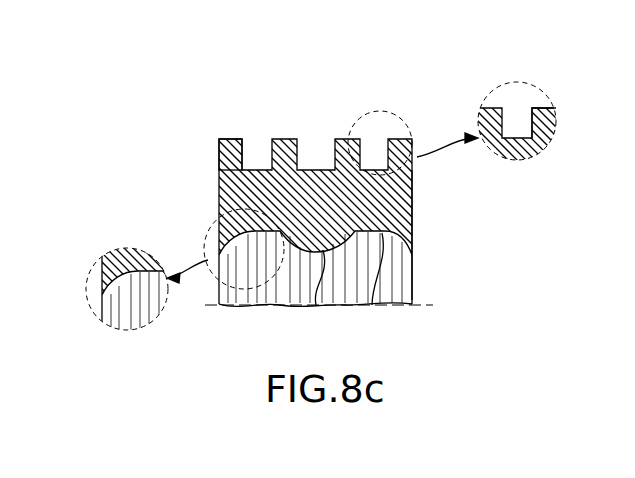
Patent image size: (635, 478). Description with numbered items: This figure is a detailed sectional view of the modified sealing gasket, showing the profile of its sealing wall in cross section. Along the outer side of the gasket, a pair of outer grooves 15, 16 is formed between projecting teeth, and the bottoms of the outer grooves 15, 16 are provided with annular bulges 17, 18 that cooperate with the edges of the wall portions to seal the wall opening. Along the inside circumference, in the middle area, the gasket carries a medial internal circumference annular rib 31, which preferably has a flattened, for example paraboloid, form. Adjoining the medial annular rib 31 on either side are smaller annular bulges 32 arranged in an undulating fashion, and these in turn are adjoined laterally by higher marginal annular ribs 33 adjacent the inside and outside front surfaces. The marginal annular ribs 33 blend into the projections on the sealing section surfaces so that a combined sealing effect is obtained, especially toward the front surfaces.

The outer groove 15 is at (258, 135).
The outer groove 16 is at (520, 105).
The annular bulge 17 is at (232, 162).
The annular bulge 18 is at (557, 127).
The medial internal circumference annular rib 31 is at (316, 305).
The smaller annular bulges 32 is at (372, 305).
The marginal annular ribs 33 is at (413, 226).